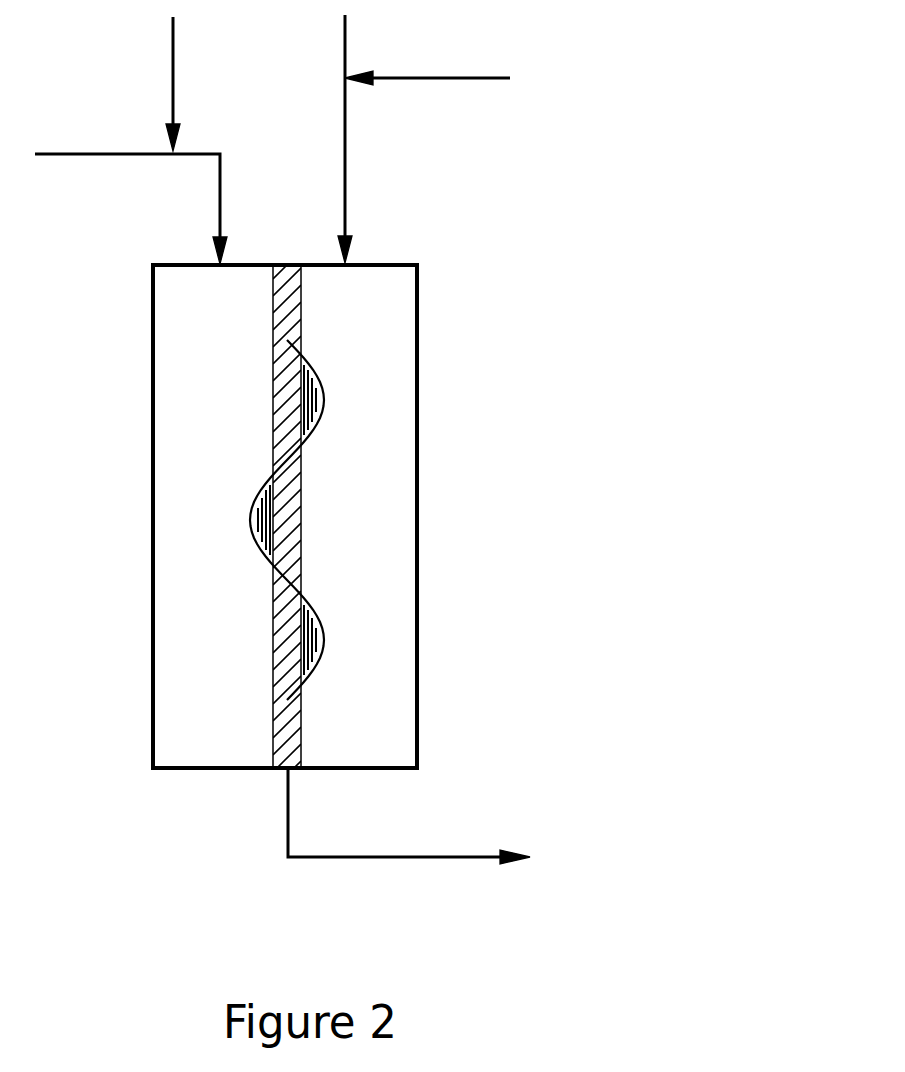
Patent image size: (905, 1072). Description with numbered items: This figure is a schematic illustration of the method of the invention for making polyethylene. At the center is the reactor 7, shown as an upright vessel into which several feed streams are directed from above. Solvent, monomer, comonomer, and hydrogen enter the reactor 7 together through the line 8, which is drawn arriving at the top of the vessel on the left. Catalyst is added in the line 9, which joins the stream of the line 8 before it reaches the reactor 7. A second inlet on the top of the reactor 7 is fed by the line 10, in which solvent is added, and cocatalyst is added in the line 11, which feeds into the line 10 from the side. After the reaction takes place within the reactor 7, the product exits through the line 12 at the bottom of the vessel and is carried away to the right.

The reactor 7 is at (153, 523).
The line 8 is at (138, 154).
The line 9 is at (173, 71).
The line 10 is at (345, 50).
The line 11 is at (412, 78).
The line 12 is at (353, 857).